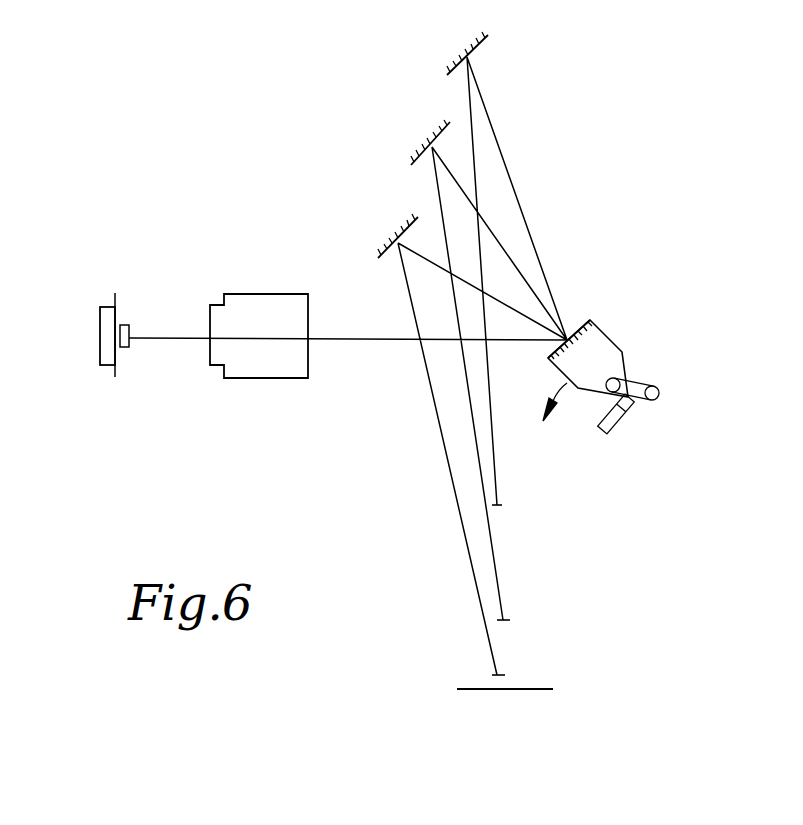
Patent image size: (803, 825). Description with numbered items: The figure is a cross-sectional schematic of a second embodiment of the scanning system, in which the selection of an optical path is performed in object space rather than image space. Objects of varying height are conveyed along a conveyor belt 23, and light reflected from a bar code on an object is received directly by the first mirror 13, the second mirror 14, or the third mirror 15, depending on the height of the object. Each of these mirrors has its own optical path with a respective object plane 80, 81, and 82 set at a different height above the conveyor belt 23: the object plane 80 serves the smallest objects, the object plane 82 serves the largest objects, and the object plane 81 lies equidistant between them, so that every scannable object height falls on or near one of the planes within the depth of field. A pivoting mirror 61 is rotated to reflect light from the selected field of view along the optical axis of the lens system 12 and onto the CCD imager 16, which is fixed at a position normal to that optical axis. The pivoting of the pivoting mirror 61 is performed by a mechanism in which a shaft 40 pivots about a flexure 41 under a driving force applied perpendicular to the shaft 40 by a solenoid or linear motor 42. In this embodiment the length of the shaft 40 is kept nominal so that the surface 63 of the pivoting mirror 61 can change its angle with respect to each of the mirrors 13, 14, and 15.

The lens system 12 is at (270, 294).
The first mirror 13 is at (466, 46).
The second mirror 14 is at (428, 140).
The third mirror 15 is at (395, 236).
The CCD imager 16 is at (100, 345).
The conveyor belt 23 is at (548, 689).
The shaft 40 is at (635, 378).
The flexure 41 is at (659, 393).
The linear motor 42 is at (617, 425).
The pivoting mirror 61 is at (603, 347).
The surface of the pivoting mirror 63 is at (585, 320).
The object plane 80 is at (494, 673).
The object plane 81 is at (510, 620).
The object plane 82 is at (502, 505).